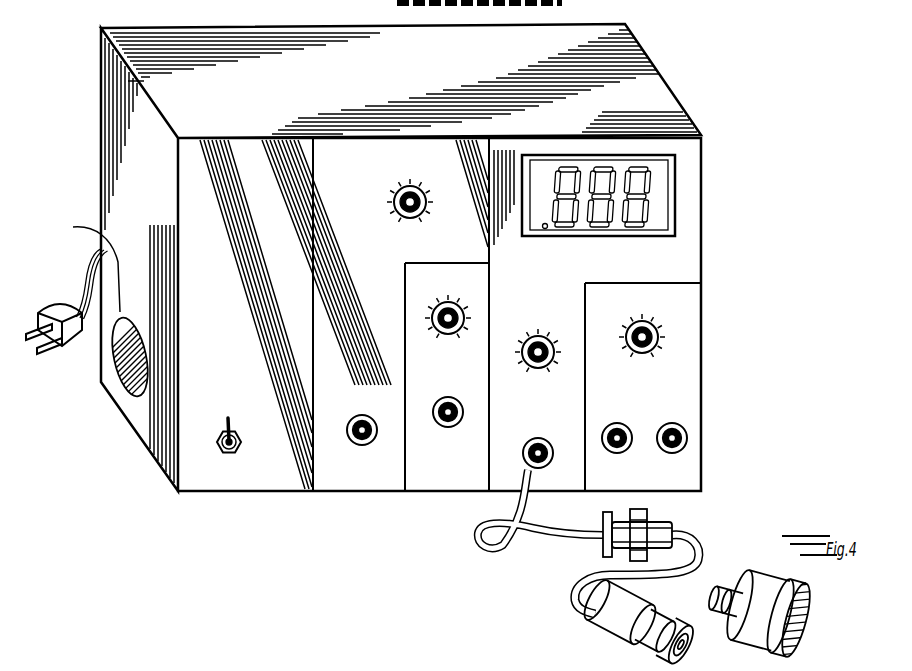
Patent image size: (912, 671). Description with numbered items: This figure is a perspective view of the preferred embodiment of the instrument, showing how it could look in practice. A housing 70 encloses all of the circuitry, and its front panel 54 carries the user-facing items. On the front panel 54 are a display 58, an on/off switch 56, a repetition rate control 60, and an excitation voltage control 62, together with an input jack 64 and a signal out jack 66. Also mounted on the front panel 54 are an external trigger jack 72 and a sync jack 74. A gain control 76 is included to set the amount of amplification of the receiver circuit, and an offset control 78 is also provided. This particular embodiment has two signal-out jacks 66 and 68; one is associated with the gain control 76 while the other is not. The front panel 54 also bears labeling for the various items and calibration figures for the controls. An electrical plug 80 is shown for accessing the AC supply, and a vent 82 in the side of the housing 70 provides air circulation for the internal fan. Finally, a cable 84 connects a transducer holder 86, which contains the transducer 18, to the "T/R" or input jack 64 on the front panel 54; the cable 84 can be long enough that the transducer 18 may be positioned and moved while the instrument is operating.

The transducer 18 is at (780, 612).
The front panel 54 is at (183, 205).
The on/off switch 56 is at (222, 455).
The display 58 is at (676, 238).
The repetition rate control 60 is at (660, 327).
The excitation voltage control 62 is at (553, 336).
The input jack 64 is at (550, 467).
The signal out jack 66 is at (350, 437).
The signal-out jack 68 is at (435, 415).
The housing 70 is at (698, 119).
The external trigger jack 72 is at (605, 450).
The sync jack 74 is at (690, 433).
The gain control 76 is at (437, 307).
The offset control 78 is at (400, 193).
The electrical plug 80 is at (50, 306).
The vent 82 is at (73, 229).
The cable 84 is at (578, 600).
The transducer holder 86 is at (793, 633).